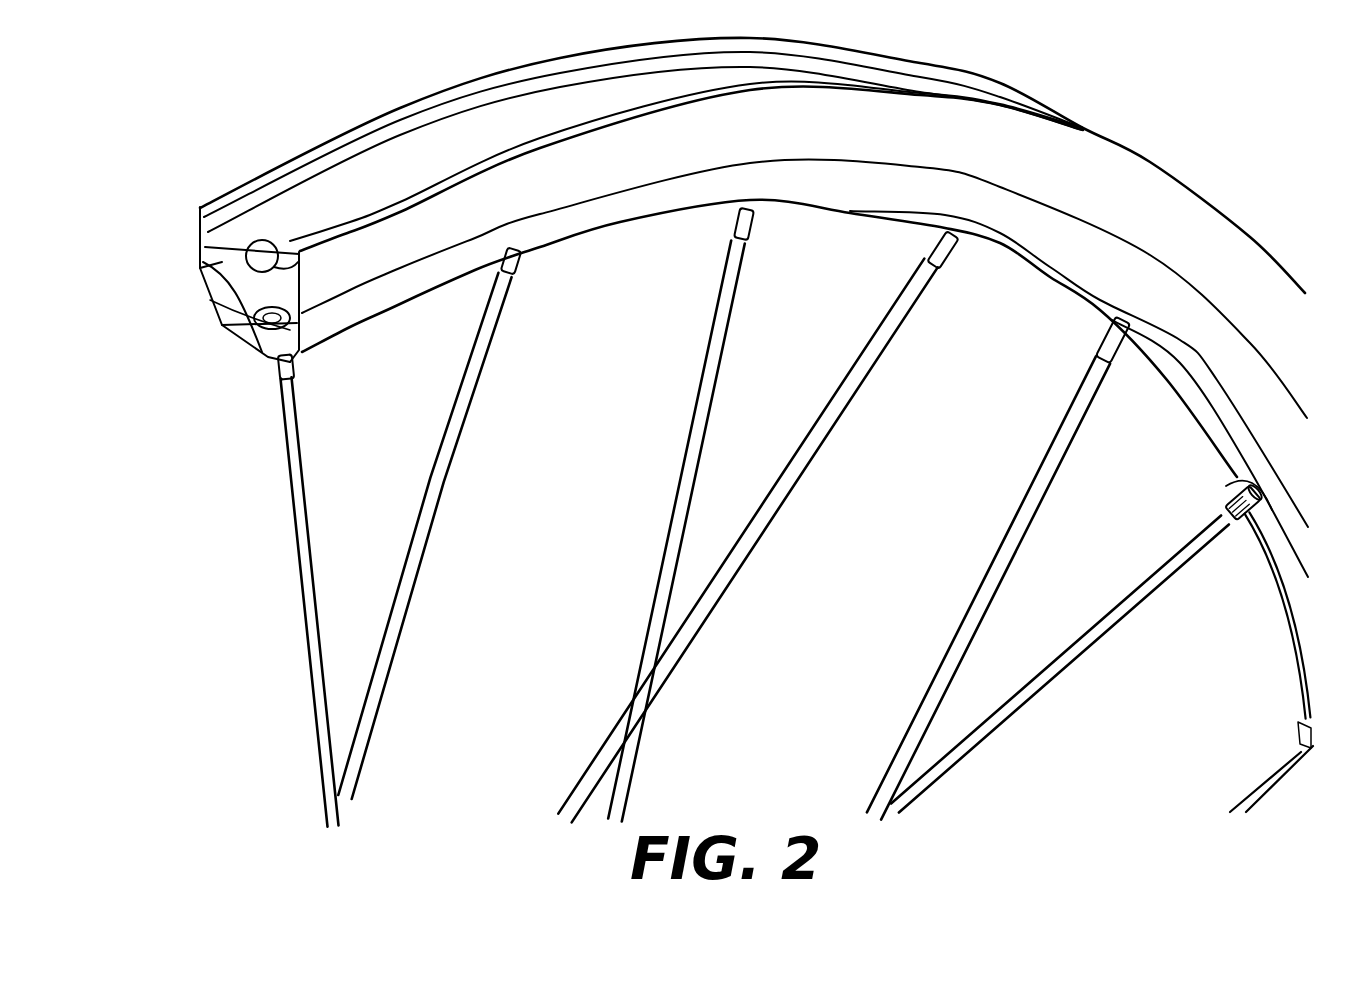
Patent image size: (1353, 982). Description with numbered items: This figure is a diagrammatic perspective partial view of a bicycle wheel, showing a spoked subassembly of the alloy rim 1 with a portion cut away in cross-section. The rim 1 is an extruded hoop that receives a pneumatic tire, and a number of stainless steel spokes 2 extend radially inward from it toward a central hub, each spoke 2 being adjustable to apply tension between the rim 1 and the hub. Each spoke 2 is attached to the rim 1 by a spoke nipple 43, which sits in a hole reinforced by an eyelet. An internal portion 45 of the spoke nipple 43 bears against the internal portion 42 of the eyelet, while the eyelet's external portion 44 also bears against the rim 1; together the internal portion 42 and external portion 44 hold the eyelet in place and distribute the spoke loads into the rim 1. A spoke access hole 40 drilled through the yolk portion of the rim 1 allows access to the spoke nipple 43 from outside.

The rim 1 is at (998, 171).
The spoke 2 is at (295, 475).
The spoke access hole 40 is at (268, 255).
The internal portion of eyelet 42 is at (262, 324).
The spoke nipple 43 is at (282, 365).
The external portion of eyelet 44 is at (1252, 516).
The internal portion of spoke nipple 45 is at (258, 318).